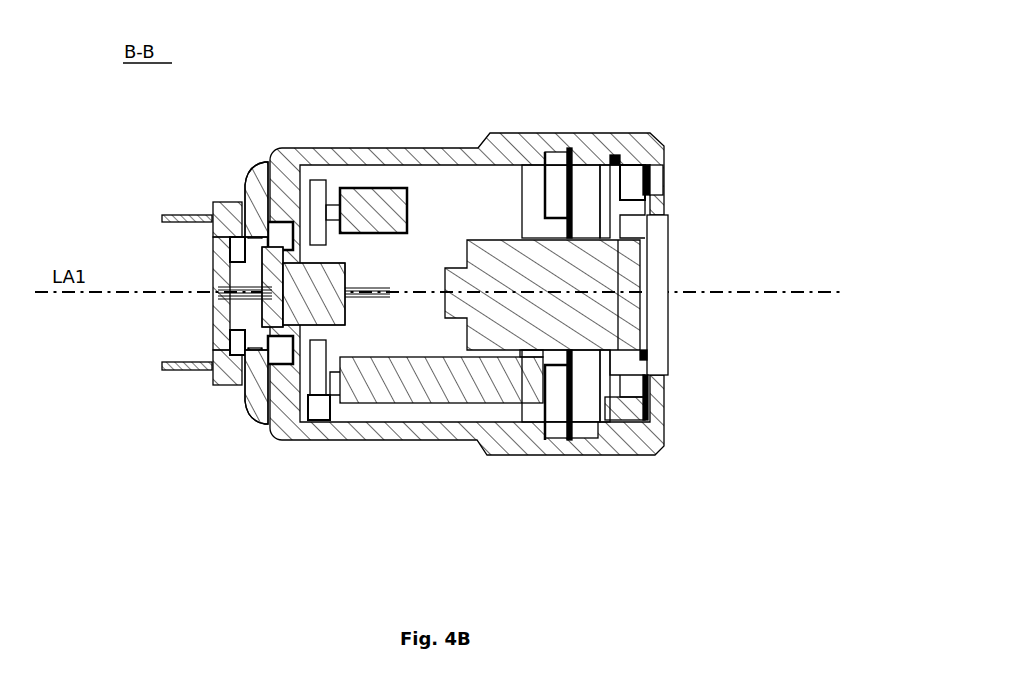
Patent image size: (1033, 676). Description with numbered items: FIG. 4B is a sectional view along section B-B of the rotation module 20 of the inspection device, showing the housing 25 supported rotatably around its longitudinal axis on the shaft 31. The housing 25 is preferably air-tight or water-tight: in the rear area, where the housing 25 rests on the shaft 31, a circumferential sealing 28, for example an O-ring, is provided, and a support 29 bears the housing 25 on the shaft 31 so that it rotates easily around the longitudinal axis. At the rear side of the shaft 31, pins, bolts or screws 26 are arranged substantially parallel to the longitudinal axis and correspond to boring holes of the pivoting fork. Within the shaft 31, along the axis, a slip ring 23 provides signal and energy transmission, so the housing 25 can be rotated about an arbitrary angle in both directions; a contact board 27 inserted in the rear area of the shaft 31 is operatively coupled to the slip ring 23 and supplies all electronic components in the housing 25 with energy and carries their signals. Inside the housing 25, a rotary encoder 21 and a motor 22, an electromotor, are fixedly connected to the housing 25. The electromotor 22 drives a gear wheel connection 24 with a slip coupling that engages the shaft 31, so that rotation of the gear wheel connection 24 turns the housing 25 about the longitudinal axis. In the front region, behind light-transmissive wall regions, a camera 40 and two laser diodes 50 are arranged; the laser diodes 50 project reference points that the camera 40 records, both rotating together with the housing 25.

The rotation module 20 is at (621, 84).
The rotary encoder 21 is at (390, 185).
The motor 22 is at (469, 409).
The slip ring 23 is at (343, 326).
The gear wheel connection 24 is at (326, 409).
The housing 25 is at (511, 131).
The pins, bolts or screws 26 is at (171, 372).
The contact board 27 is at (208, 265).
The sealing 28 is at (261, 360).
The support 29 is at (280, 356).
The shaft 31 is at (210, 200).
The camera 40 is at (614, 293).
The laser diodes 50 is at (664, 170).